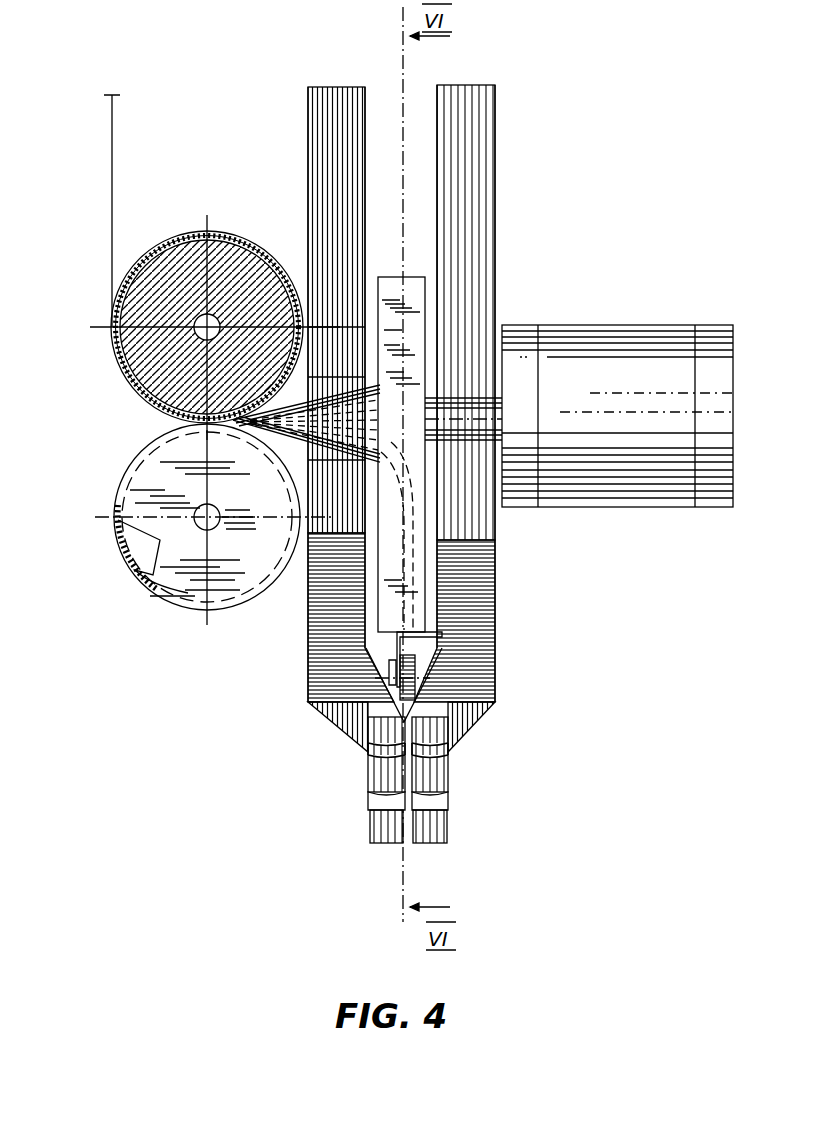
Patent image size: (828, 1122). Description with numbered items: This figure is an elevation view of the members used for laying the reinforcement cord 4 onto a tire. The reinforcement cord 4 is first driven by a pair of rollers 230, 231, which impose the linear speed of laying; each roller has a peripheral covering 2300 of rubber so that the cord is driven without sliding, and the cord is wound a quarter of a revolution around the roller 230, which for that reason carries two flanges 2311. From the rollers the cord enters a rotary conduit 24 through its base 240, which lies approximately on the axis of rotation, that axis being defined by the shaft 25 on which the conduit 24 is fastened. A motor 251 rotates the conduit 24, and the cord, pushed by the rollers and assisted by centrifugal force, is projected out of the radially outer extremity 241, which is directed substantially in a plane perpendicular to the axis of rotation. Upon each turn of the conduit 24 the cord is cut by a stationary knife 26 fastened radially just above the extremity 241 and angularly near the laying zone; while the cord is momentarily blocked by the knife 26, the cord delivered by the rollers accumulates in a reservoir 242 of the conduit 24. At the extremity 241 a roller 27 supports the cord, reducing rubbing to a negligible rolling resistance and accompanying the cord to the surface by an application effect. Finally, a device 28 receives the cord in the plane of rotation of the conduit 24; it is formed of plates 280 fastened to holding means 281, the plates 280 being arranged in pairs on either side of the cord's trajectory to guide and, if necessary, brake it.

The reinforcement cord 4 is at (112, 150).
The roller 230 is at (147, 343).
The flanges 2311 is at (170, 236).
The peripheral covering 2300 is at (250, 238).
The roller 231 is at (193, 595).
The base 240 is at (248, 427).
The rotary conduit 24 is at (410, 583).
The radially outer extremity 241 is at (410, 633).
The reservoir 242 is at (408, 485).
The shaft 25 is at (473, 392).
The motor 251 is at (630, 340).
The stationary knife 26 is at (400, 637).
The roller 27 is at (415, 682).
The device for receiving the reinforcement cord 28 is at (445, 797).
The plates 280 is at (375, 780).
The holding means 281 is at (387, 840).